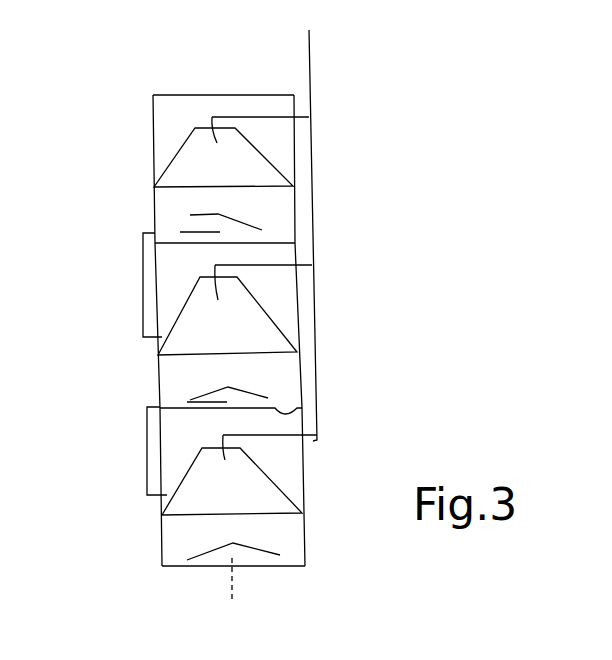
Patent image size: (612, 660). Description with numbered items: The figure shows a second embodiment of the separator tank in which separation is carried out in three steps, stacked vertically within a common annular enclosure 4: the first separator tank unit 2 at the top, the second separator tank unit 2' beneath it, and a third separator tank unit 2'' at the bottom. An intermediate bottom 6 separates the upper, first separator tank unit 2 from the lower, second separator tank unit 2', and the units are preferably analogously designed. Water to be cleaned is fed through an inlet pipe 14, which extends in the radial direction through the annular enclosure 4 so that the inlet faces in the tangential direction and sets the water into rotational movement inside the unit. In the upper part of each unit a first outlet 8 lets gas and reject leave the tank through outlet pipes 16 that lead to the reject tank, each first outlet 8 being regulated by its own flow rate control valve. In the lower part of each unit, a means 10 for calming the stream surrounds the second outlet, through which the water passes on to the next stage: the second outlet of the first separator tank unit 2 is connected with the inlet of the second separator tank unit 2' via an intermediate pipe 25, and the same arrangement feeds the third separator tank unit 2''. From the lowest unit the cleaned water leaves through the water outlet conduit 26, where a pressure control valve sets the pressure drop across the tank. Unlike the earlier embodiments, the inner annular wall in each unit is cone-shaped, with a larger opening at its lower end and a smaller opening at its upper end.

The first separator tank unit 2 is at (268, 152).
The second separator tank unit 2' is at (290, 301).
The third separator tank unit 2'' is at (291, 463).
The annular enclosure 4 is at (153, 383).
The intermediate bottom 6 is at (283, 242).
The first outlet 8 is at (219, 308).
The means for calming the stream 10 is at (190, 215).
The inlet pipe 14 is at (162, 165).
The outlet pipes 16 is at (310, 66).
The intermediate pipe 25 is at (142, 287).
The water outlet conduit 26 is at (232, 588).